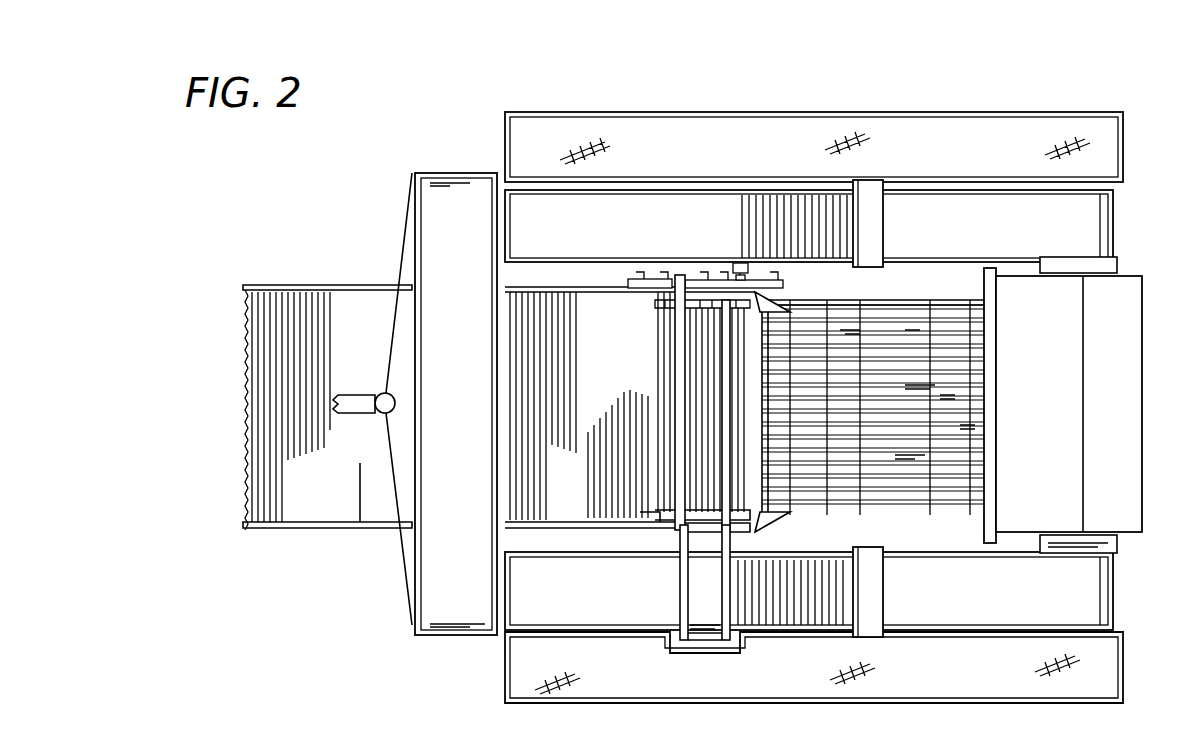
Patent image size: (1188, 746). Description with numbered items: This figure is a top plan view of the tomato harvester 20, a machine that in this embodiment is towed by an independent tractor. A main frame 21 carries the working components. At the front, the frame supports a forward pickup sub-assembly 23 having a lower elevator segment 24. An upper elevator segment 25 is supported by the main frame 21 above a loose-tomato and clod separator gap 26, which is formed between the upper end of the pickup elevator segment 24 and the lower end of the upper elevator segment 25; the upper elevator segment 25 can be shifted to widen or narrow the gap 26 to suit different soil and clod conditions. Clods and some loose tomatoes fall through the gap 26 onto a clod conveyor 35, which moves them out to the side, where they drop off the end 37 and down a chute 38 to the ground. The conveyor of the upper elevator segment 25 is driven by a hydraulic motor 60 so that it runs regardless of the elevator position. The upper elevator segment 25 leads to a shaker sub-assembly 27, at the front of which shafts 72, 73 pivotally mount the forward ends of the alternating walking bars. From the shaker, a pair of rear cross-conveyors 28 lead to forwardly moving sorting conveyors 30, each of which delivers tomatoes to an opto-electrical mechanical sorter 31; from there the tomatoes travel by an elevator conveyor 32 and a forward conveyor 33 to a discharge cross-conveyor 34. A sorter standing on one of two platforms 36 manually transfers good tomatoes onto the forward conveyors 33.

The tomato harvester 20 is at (617, 62).
The main frame 21 is at (1018, 550).
The forward pickup sub-assembly 23 is at (330, 530).
The lower elevator segment 24 is at (328, 310).
The upper elevator segment 25 is at (697, 304).
The loose-tomato and clod separator gap 26 is at (688, 390).
The shaker sub-assembly 27 is at (904, 300).
The rear cross-conveyors 28 is at (1076, 266).
The sorting conveyors 30 is at (1030, 228).
The opto-electrical mechanical sorter 31 is at (878, 218).
The elevator conveyor 32 is at (803, 195).
The forward conveyor 33 is at (652, 228).
The discharge cross-conveyor 34 is at (472, 238).
The clod conveyor 35 is at (693, 590).
The platform 36 is at (762, 158).
The end of the clod conveyor 37 is at (698, 634).
The chute 38 is at (707, 640).
The hydraulic motor 60 is at (741, 262).
The shaft 72 is at (775, 335).
The shaft 73 is at (782, 490).